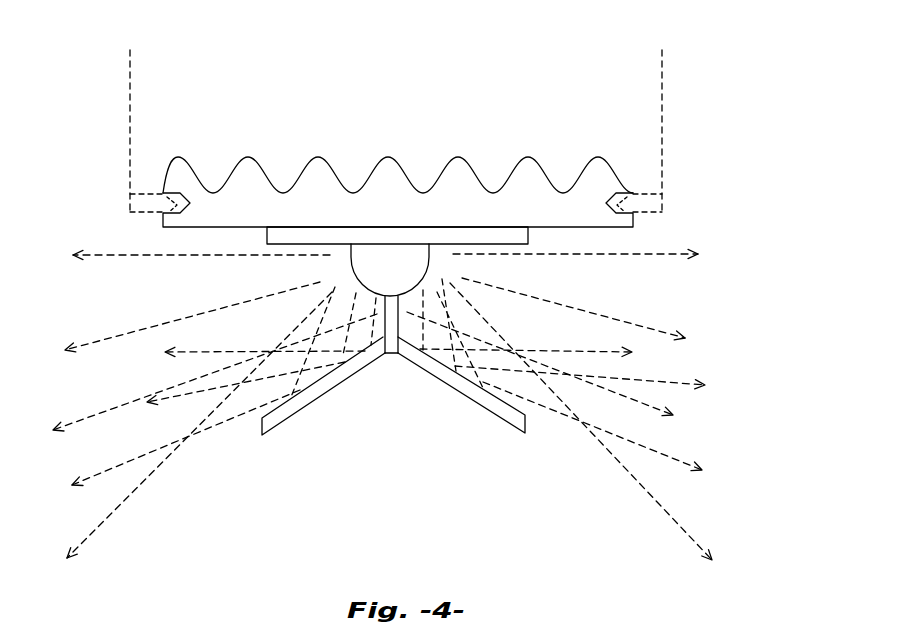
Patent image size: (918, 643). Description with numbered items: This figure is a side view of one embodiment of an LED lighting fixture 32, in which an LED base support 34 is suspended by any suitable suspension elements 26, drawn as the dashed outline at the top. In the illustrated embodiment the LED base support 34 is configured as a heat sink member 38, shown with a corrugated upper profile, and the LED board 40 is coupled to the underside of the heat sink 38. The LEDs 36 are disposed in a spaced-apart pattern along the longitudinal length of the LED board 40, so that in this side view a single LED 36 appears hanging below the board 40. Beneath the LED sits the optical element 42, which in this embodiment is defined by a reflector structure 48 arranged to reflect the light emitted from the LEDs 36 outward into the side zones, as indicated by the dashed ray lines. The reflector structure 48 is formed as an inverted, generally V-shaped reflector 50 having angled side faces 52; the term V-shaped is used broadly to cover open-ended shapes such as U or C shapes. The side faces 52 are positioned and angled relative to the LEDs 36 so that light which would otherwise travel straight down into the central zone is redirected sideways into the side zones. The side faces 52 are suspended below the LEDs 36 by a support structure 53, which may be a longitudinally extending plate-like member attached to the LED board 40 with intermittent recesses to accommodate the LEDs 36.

The suspension element 26 is at (662, 140).
The lighting fixture 32 is at (740, 121).
The LED base support 34 is at (514, 102).
The LED 36 is at (371, 260).
The heat sink member 38 is at (322, 172).
The LED board 40 is at (508, 246).
The optical element 42 is at (398, 446).
The reflector structure 48 is at (464, 404).
The inverted V-shaped reflector 50 is at (320, 399).
The side face 52 is at (320, 373).
The support structure 53 is at (393, 356).